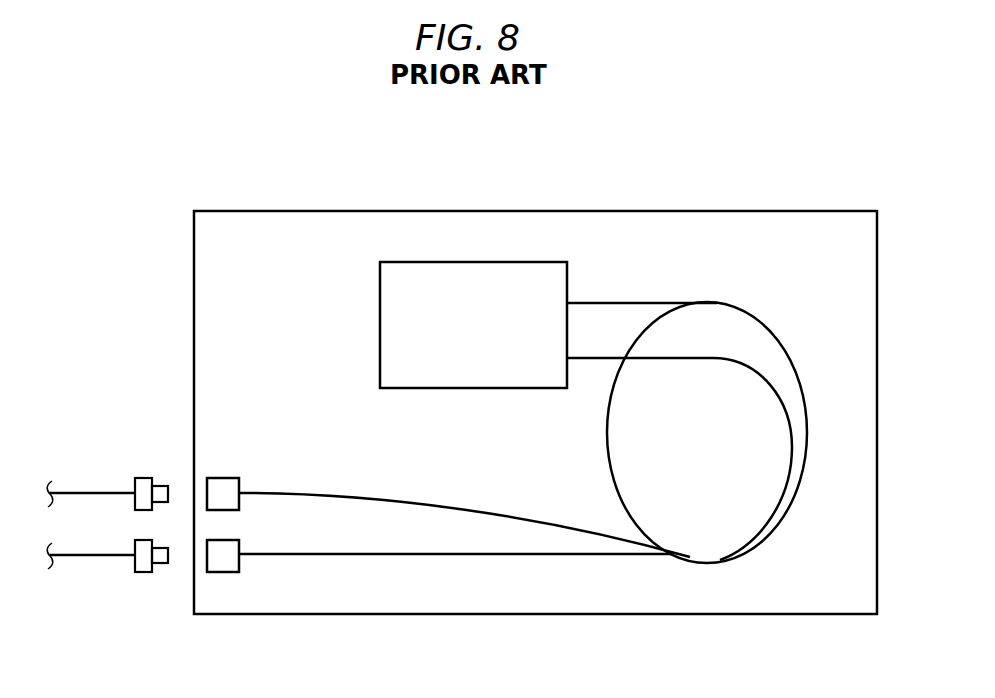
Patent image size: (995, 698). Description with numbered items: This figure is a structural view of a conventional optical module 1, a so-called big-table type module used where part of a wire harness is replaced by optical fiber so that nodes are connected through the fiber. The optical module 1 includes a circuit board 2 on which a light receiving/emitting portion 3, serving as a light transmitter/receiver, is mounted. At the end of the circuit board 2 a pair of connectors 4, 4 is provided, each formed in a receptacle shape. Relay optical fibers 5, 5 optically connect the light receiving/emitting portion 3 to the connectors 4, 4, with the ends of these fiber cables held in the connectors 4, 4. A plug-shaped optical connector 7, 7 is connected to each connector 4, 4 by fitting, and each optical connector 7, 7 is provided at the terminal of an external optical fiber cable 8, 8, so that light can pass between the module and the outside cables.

The optical module 1 is at (707, 185).
The circuit board 2 is at (290, 250).
The light receiving/emitting portion 3 is at (452, 297).
The connector 4 is at (215, 485).
The relay optical fiber 5 is at (312, 497).
The optical connector 7 is at (140, 483).
The optical fiber cable 8 is at (75, 490).